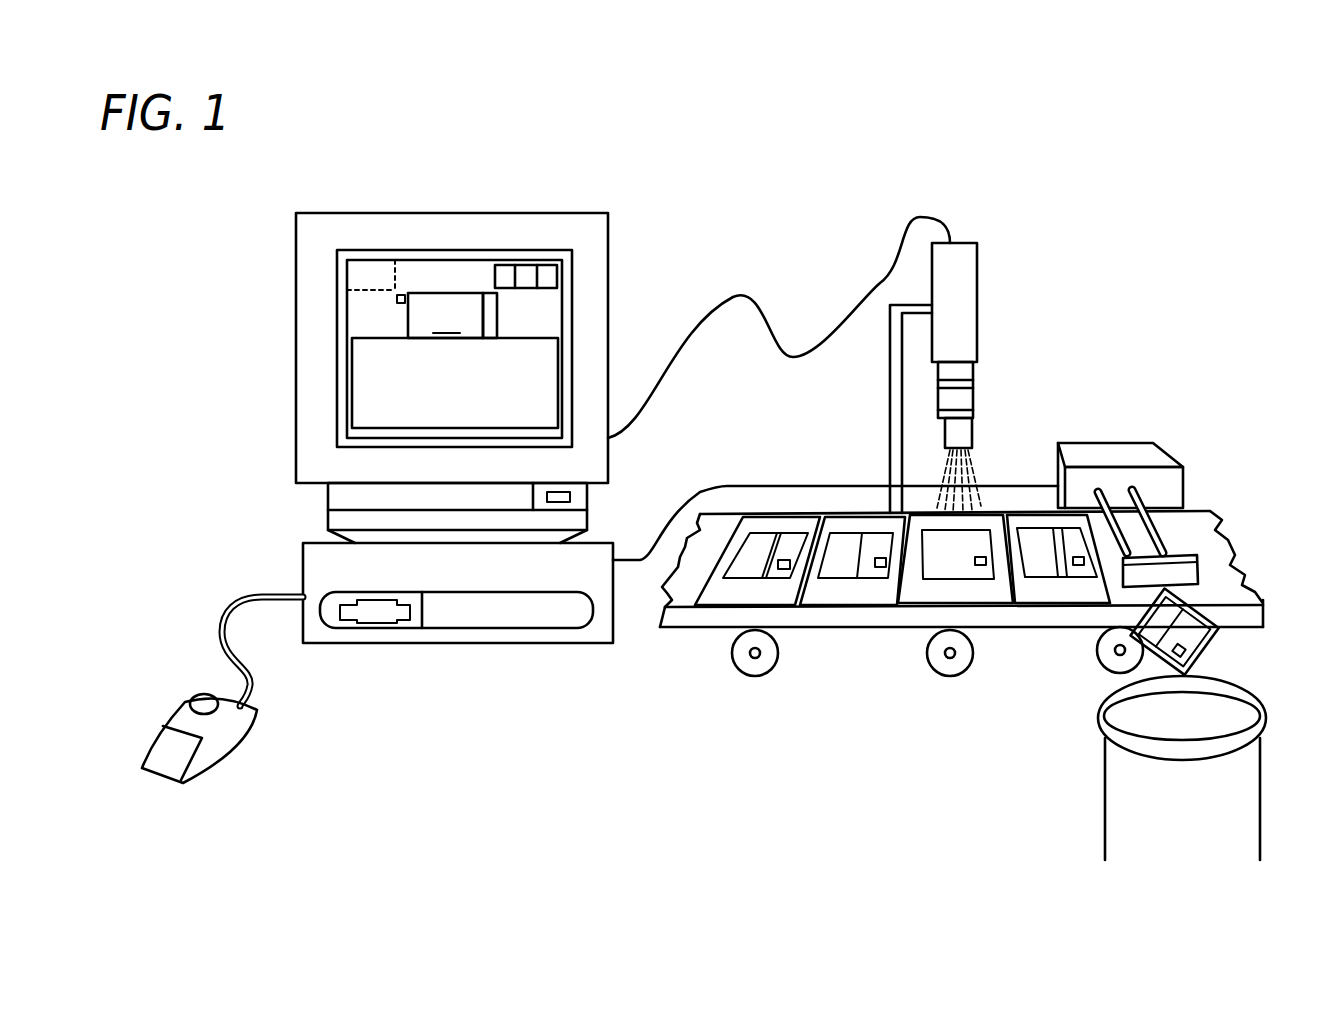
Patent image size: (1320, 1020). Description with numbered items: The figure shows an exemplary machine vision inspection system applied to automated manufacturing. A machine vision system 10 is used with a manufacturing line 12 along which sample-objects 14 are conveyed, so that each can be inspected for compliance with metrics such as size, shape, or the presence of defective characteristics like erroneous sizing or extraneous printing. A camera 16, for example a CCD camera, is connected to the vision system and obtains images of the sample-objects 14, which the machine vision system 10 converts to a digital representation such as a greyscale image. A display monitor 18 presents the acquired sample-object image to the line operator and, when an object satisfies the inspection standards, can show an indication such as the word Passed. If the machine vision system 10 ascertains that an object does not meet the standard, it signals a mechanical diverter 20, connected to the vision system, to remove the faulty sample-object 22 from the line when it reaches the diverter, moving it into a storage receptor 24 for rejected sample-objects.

The machine vision system 10 is at (472, 584).
The manufacturing line 12 is at (726, 695).
The sample-objects 14 is at (962, 563).
The camera 16 is at (940, 315).
The display monitor 18 is at (609, 298).
The mechanical diverter 20 is at (1170, 484).
The faulty sample-object 22 is at (1205, 642).
The storage receptor 24 is at (1166, 836).